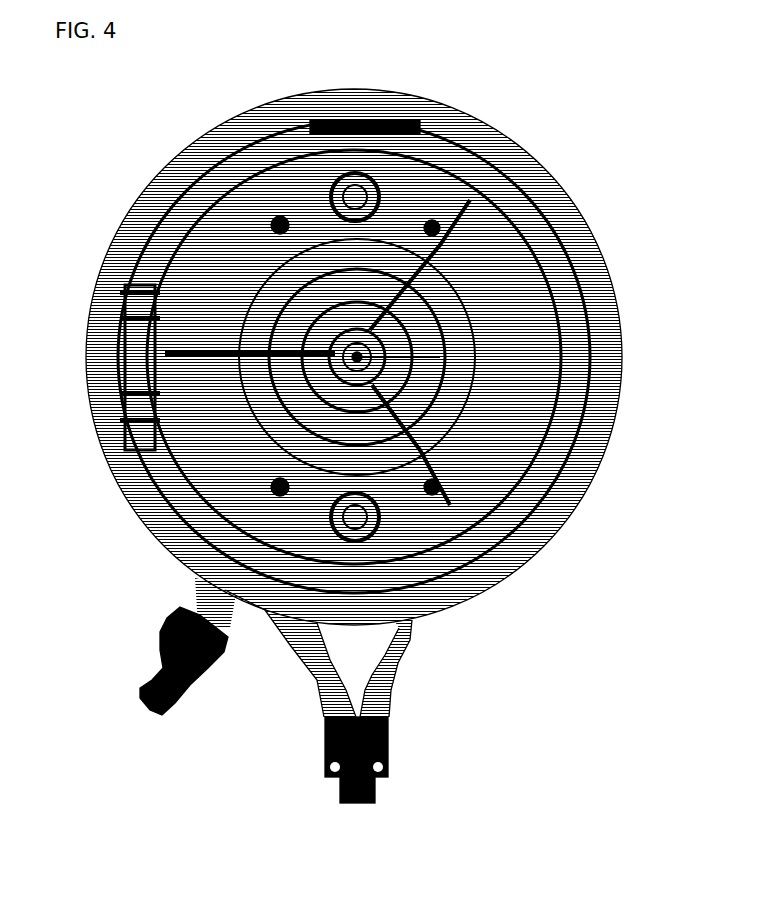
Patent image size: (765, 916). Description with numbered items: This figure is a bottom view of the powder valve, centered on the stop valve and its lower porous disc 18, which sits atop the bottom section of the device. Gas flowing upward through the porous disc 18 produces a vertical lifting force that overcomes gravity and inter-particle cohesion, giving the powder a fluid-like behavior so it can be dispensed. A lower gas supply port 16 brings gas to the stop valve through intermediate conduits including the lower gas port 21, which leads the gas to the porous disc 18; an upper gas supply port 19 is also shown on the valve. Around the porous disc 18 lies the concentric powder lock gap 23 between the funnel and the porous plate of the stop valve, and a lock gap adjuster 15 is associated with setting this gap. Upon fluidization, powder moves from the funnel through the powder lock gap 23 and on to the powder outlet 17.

The lock gap adjuster 15 is at (380, 186).
The lower gas supply port 16 is at (190, 595).
The powder outlet 17 is at (275, 320).
The lower porous disc 18 is at (388, 335).
The upper gas supply port 19 is at (385, 682).
The lower gas port 21 is at (403, 440).
The powder lock gap 23 is at (412, 357).